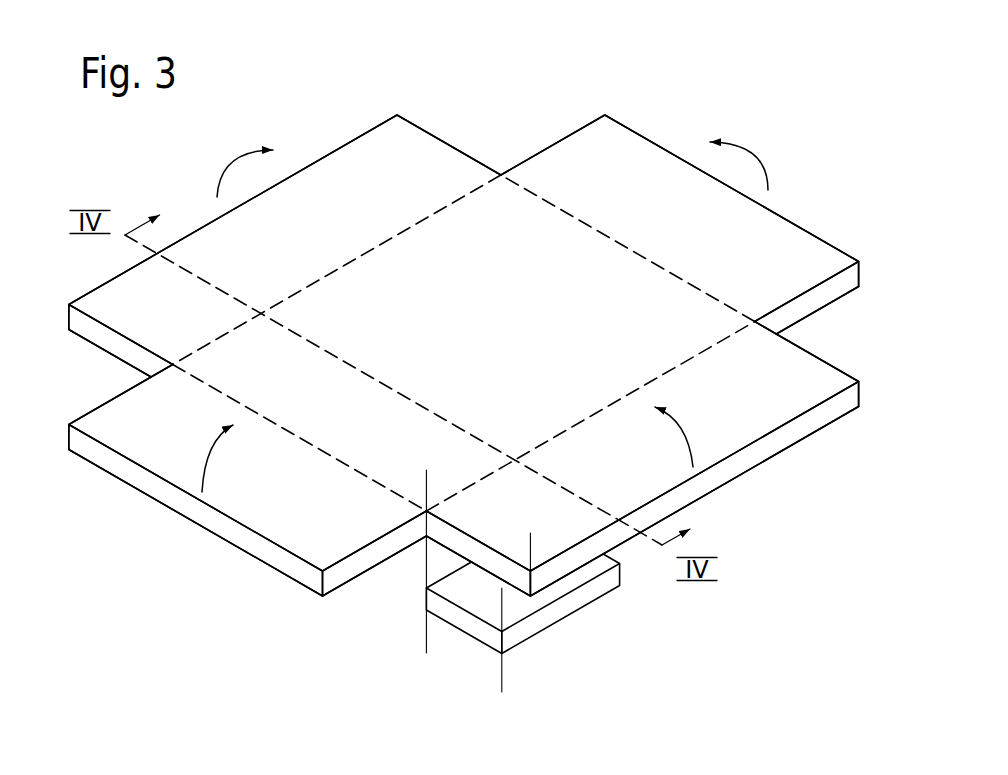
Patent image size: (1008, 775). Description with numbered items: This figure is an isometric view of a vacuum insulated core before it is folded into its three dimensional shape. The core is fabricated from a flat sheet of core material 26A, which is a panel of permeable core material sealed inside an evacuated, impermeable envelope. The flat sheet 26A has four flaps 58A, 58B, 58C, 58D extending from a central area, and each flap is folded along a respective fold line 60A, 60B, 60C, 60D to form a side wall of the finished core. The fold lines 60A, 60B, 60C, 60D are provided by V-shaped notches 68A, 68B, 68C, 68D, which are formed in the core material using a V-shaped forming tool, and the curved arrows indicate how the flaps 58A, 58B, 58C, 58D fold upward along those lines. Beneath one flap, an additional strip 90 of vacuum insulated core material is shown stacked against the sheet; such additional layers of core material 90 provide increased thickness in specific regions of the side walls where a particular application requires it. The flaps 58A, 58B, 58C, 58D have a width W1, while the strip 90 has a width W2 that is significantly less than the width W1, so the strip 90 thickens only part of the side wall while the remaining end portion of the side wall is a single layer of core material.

The flat sheet of core material 26A is at (93, 468).
The flap 58A is at (328, 543).
The flap 58B is at (770, 412).
The flap 58C is at (783, 243).
The flap 58D is at (335, 173).
The fold line 60A is at (222, 393).
The fold line 60B is at (660, 376).
The fold line 60C is at (553, 205).
The fold line 60D is at (412, 227).
The V-shaped notch 68A is at (322, 450).
The V-shaped notch 68B is at (703, 351).
The V-shaped notch 68C is at (599, 231).
The V-shaped notch 68D is at (368, 252).
The additional strip of core material 90 is at (552, 632).
The width of flaps W1 is at (560, 562).
The width of strip W2 is at (390, 618).